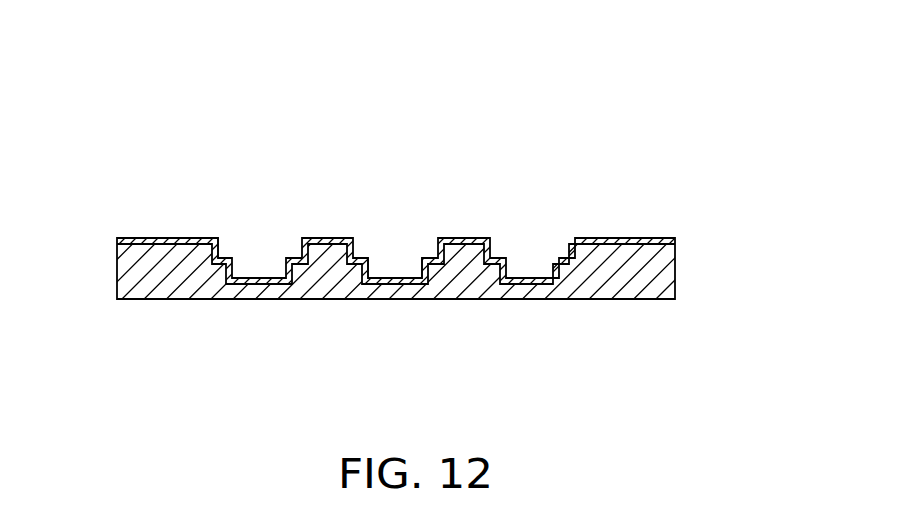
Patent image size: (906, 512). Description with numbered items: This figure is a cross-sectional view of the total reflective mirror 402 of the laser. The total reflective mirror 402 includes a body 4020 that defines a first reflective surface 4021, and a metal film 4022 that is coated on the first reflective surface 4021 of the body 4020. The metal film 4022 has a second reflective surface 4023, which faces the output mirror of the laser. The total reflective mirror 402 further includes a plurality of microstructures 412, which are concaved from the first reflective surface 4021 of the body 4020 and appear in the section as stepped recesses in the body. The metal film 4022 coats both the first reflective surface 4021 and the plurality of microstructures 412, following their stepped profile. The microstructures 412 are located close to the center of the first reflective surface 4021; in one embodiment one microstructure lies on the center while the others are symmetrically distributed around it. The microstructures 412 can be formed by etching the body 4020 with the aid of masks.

The total reflective mirror 402 is at (487, 41).
The body 4020 is at (662, 268).
The first reflective surface 4021 is at (152, 255).
The metal film 4022 is at (630, 243).
The second reflective surface 4023 is at (171, 228).
The microstructures 412 is at (400, 262).